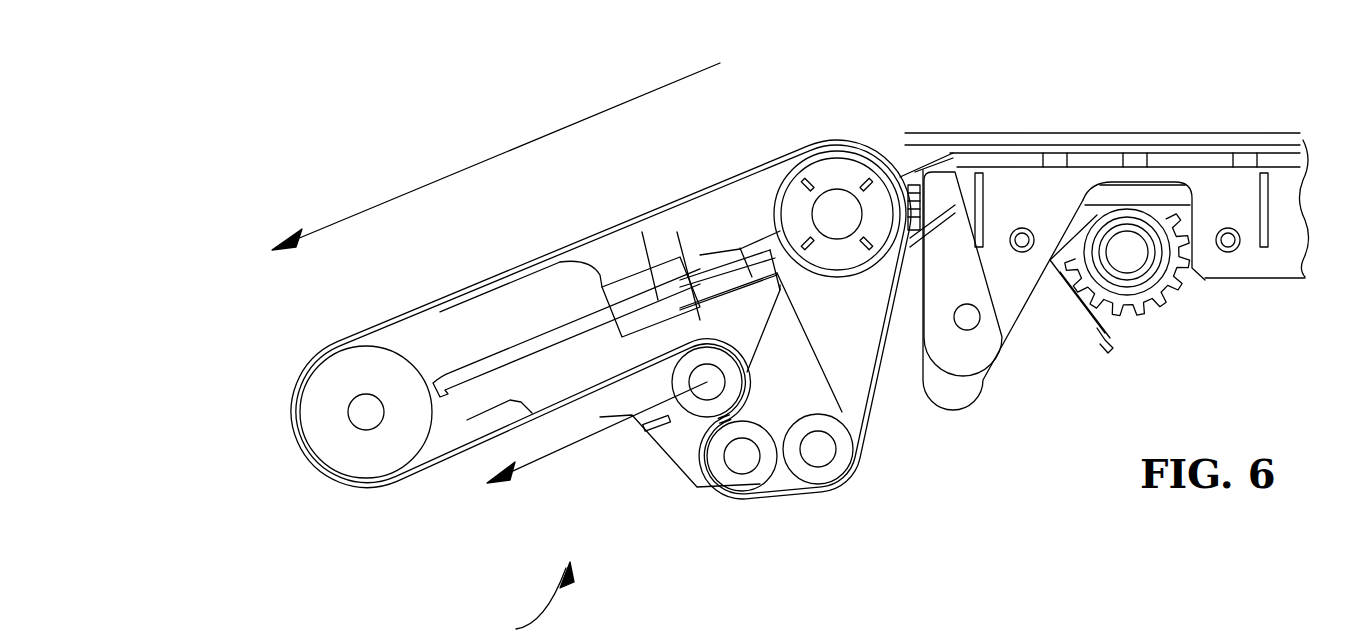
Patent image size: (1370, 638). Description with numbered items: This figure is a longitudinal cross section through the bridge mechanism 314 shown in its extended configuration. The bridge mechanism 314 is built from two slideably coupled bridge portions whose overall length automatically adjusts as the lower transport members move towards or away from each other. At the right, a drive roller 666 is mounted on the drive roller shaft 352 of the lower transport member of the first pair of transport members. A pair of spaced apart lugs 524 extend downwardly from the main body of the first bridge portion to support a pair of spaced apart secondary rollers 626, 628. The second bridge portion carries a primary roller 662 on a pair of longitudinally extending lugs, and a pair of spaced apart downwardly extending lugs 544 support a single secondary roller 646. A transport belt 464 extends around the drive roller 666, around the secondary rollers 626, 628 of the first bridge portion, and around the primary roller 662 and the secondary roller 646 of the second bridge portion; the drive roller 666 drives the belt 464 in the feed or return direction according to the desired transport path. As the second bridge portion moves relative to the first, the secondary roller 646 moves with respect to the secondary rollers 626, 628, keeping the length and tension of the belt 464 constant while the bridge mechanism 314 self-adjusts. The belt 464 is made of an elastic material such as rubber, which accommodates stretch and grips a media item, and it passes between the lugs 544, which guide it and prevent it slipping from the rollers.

The bridge mechanism 314 is at (520, 600).
The drive roller shaft 352 is at (846, 210).
The transport belt 464 is at (300, 380).
The lugs 524 is at (797, 385).
The lugs 544 is at (617, 400).
The secondary roller 626 is at (728, 480).
The secondary roller 628 is at (824, 472).
The secondary roller 646 is at (703, 347).
The primary roller 662 is at (330, 455).
The drive roller 666 is at (836, 168).